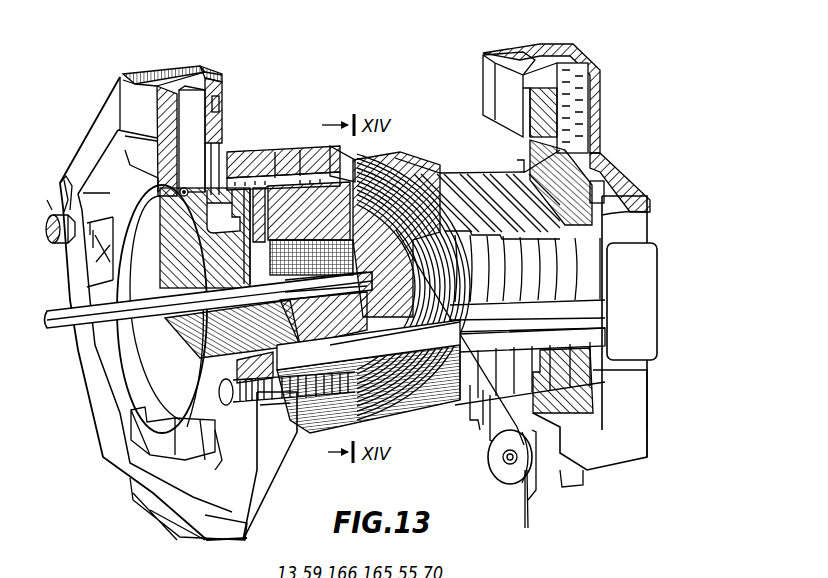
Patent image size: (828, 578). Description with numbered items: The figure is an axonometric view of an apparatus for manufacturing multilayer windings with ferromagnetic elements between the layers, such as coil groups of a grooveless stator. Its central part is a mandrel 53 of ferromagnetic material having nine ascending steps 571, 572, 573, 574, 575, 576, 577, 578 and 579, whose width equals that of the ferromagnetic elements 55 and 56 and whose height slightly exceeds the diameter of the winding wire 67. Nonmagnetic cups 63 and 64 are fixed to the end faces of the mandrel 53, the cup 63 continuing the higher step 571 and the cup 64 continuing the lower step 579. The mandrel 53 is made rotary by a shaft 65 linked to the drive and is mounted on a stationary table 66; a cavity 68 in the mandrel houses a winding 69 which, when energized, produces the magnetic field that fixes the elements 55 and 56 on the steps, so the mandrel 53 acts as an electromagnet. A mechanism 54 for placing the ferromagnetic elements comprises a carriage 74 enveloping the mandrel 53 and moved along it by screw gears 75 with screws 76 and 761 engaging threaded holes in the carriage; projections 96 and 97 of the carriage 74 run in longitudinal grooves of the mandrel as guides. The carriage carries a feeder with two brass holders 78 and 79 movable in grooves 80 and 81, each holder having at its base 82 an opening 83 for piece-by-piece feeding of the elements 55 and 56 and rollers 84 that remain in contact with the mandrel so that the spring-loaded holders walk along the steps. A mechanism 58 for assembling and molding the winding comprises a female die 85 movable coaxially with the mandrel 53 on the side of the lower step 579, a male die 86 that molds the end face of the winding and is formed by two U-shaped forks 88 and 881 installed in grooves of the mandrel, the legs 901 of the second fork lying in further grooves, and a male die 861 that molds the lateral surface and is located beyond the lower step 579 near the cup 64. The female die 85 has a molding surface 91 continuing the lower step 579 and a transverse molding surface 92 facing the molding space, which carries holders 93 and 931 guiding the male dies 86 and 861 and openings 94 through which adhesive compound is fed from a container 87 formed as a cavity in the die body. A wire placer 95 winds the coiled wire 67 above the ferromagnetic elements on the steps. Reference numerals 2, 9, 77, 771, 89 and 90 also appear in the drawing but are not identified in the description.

The housing 2 is at (219, 100).
The coil 9 is at (280, 188).
The mandrel 53 is at (440, 140).
The mechanism for placing ferromagnetic elements 54 is at (182, 68).
The ferromagnetic elements 55 is at (462, 185).
The ferromagnetic elements 56 is at (368, 388).
The step 571 is at (272, 165).
The step 572 is at (345, 178).
The step 573 is at (385, 182).
The step 574 is at (395, 195).
The step 575 is at (450, 178).
The step 576 is at (445, 385).
The step 577 is at (472, 380).
The step 578 is at (490, 430).
The step 579 is at (500, 468).
The mechanism for assembling and molding the winding 58 is at (605, 72).
The cup 63 is at (297, 430).
The cup 64 is at (550, 345).
The shaft 65 is at (68, 322).
The stationary table 66 is at (122, 378).
The winding wire 67 is at (530, 520).
The cavity 68 is at (300, 186).
The winding 69 is at (200, 350).
The carriage 74 is at (100, 410).
The screw gears 75 is at (48, 204).
The screw 76 is at (47, 232).
The screw 761 is at (218, 400).
The lug 77 is at (64, 180).
The post 771 is at (270, 466).
The holder 78 is at (185, 100).
The holder 79 is at (172, 535).
The groove 80 is at (150, 84).
The groove 81 is at (132, 498).
The base 82 is at (134, 165).
The opening 83 is at (180, 192).
The rollers 84 is at (210, 225).
The female die 85 is at (505, 180).
The male die 86 is at (540, 100).
The male die 861 is at (574, 420).
The container 87 is at (586, 100).
The U-shaped fork 88 is at (240, 165).
The U-shaped fork 881 is at (255, 435).
The wall 89 is at (214, 70).
The magnet 90 is at (195, 240).
The legs 901 is at (228, 428).
The molding surface 91 is at (608, 190).
The molding surface 92 is at (640, 218).
The holder 93 is at (488, 70).
The holder 931 is at (640, 438).
The openings 94 is at (600, 158).
The wire placer 95 is at (512, 478).
The projection 96 is at (100, 250).
The projection 97 is at (205, 382).